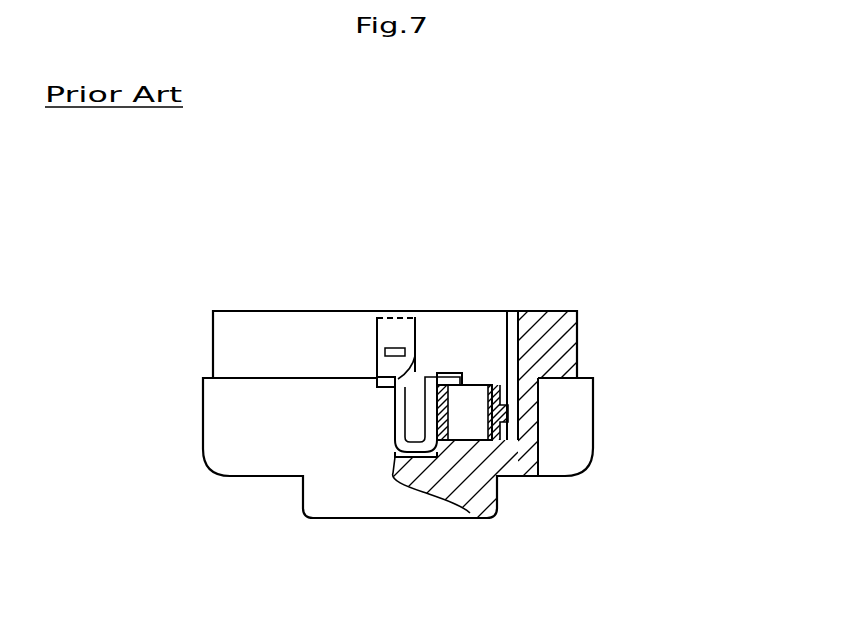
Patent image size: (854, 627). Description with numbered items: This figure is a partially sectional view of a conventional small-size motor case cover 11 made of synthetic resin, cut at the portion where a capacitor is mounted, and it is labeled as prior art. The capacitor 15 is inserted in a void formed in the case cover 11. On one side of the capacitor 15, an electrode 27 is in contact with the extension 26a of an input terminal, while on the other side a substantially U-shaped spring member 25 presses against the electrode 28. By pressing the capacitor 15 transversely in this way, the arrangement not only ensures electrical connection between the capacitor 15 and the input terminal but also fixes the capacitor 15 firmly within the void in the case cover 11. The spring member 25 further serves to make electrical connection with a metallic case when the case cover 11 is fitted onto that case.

The case cover 11 is at (222, 425).
The capacitor 15 is at (475, 390).
The spring member 25 is at (398, 332).
The extension of the input terminal 26a is at (518, 397).
The electrode 27 is at (505, 440).
The electrode 28 is at (432, 452).